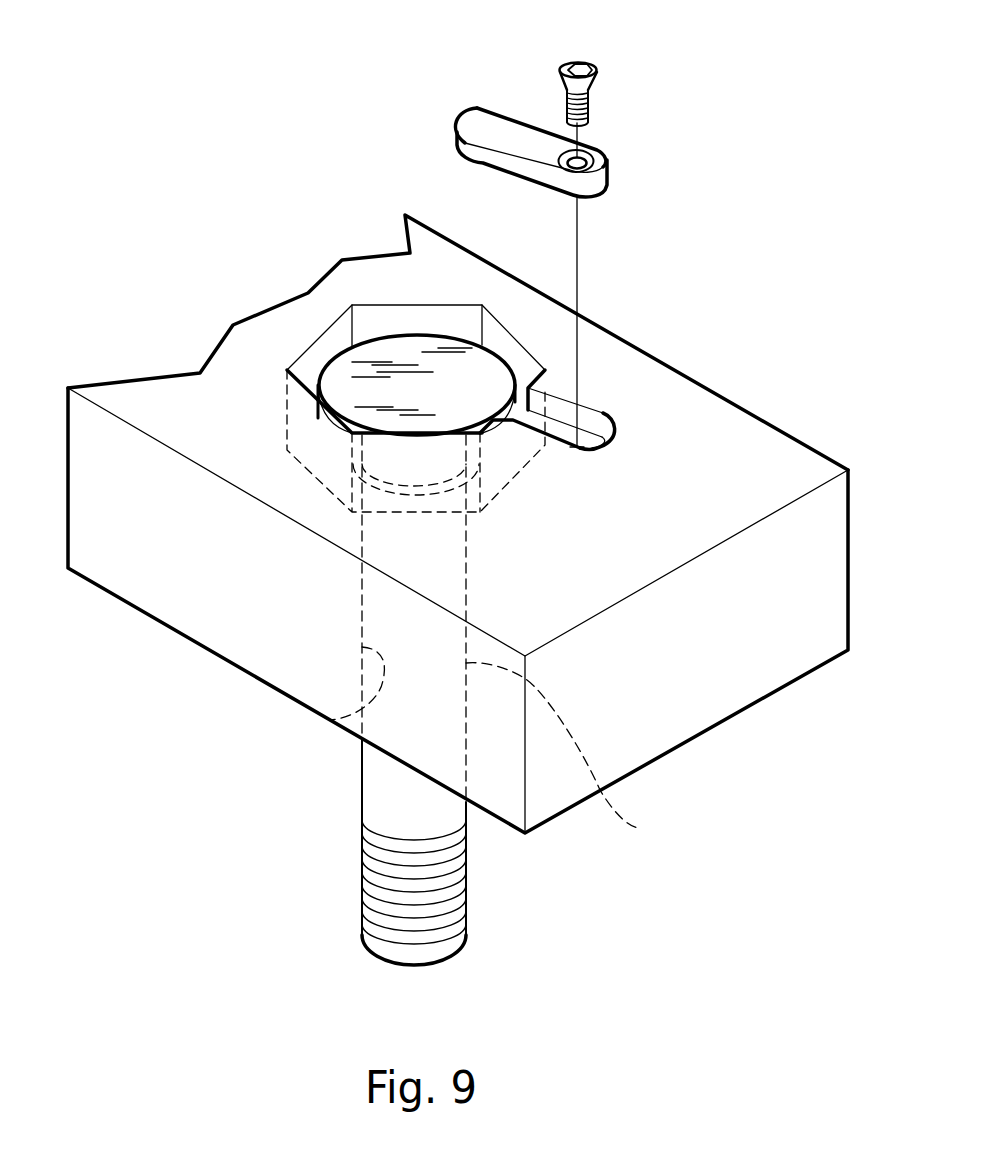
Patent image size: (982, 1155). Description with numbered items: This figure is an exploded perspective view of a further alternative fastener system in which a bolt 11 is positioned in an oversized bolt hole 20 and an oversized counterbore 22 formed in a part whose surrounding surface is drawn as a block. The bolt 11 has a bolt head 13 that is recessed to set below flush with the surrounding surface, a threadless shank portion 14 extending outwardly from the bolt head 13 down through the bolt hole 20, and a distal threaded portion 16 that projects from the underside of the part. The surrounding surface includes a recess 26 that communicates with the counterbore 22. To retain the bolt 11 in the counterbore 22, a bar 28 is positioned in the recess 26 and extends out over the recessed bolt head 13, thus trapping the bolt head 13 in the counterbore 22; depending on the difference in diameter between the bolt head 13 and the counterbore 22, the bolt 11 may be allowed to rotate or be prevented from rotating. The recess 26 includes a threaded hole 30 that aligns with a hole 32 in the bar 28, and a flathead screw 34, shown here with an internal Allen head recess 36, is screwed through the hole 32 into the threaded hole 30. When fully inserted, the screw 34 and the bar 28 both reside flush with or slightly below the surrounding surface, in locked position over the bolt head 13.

The bolt 11 is at (640, 828).
The bolt head 13 is at (407, 328).
The threadless shank portion 14 is at (380, 783).
The distal threaded portion 16 is at (455, 868).
The oversized bolt hole 20 is at (330, 720).
The oversized counterbore 22 is at (313, 360).
The recess 26 is at (562, 412).
The bar 28 is at (495, 123).
The threaded hole 30 is at (577, 447).
The hole 32 is at (607, 148).
The flathead screw 34 is at (588, 112).
The internal Allen head recess 36 is at (598, 70).